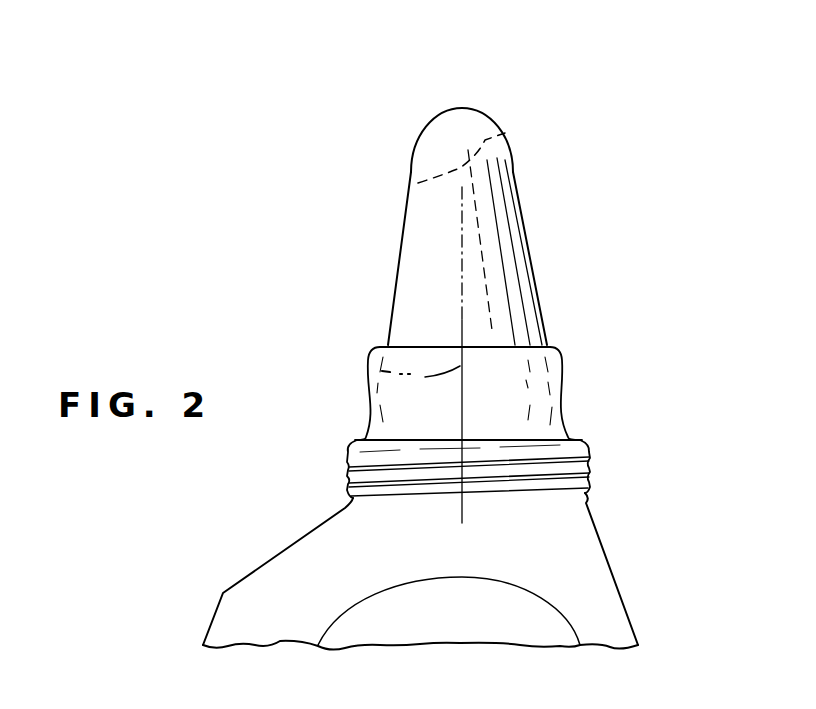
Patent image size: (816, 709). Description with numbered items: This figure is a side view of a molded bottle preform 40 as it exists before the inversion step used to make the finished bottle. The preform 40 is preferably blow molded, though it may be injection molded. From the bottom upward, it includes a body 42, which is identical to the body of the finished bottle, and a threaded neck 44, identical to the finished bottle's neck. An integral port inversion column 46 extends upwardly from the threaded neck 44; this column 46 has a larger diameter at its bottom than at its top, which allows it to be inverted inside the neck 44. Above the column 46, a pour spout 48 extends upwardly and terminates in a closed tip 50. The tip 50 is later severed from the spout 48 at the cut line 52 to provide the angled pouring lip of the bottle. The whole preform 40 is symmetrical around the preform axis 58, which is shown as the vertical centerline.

The preform 40 is at (196, 518).
The body 42 is at (617, 571).
The threaded neck 44 is at (585, 476).
The port inversion column 46 is at (563, 370).
The pour spout 48 is at (527, 233).
The closed tip 50 is at (462, 107).
The cut line 52 is at (505, 134).
The preform axis 58 is at (372, 368).